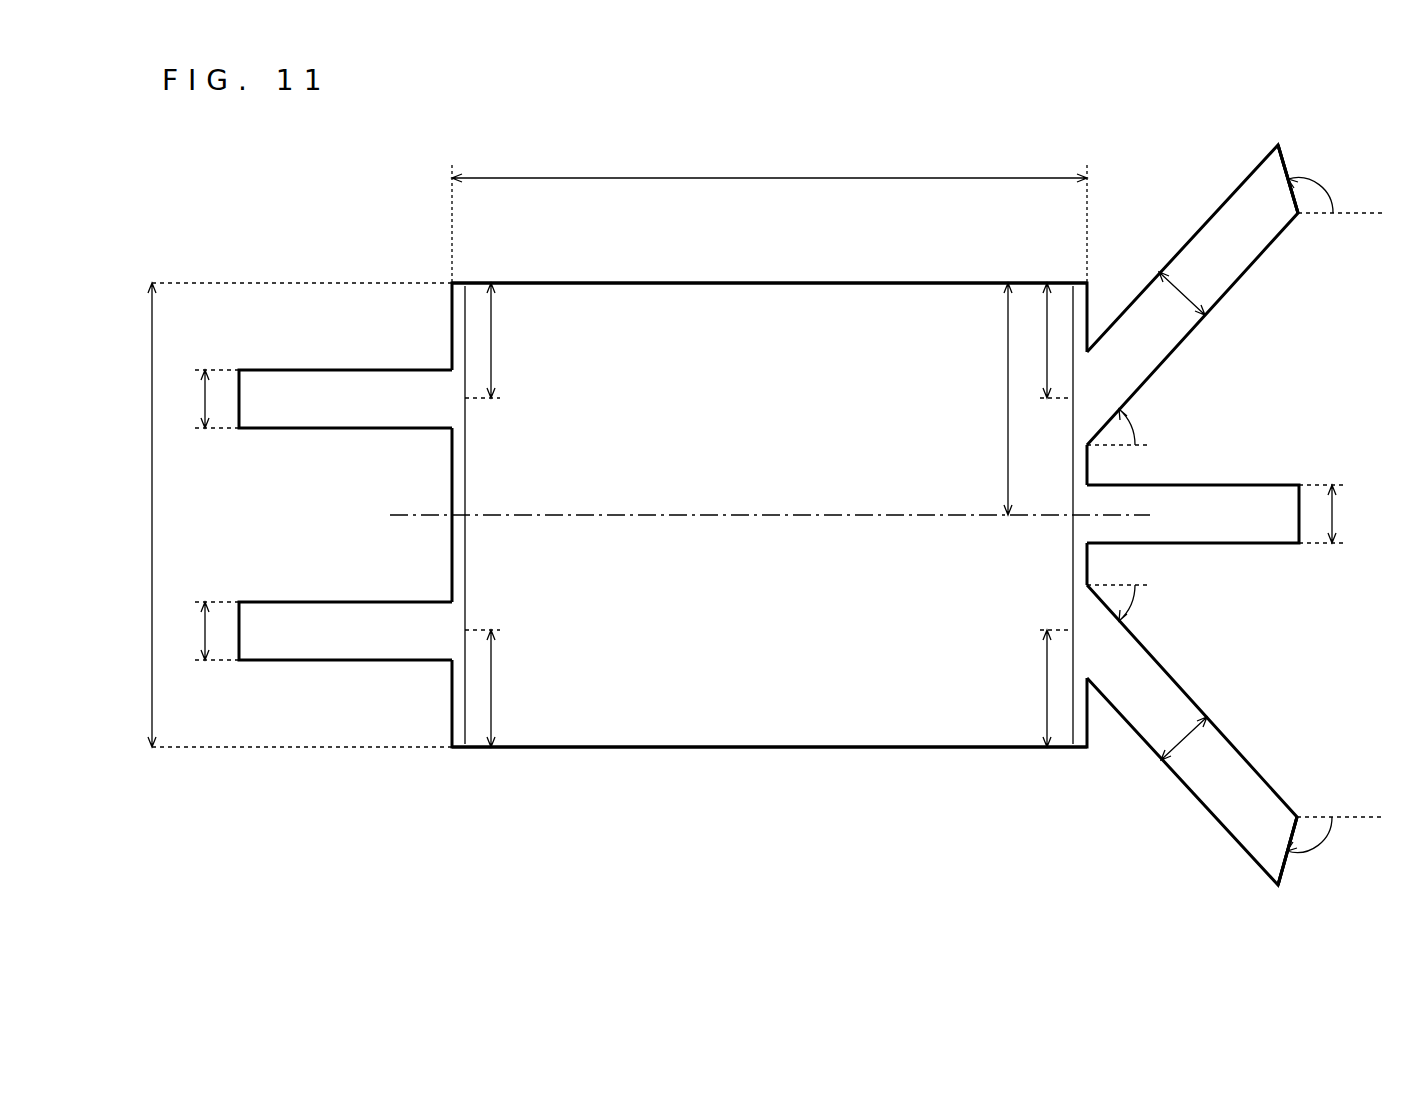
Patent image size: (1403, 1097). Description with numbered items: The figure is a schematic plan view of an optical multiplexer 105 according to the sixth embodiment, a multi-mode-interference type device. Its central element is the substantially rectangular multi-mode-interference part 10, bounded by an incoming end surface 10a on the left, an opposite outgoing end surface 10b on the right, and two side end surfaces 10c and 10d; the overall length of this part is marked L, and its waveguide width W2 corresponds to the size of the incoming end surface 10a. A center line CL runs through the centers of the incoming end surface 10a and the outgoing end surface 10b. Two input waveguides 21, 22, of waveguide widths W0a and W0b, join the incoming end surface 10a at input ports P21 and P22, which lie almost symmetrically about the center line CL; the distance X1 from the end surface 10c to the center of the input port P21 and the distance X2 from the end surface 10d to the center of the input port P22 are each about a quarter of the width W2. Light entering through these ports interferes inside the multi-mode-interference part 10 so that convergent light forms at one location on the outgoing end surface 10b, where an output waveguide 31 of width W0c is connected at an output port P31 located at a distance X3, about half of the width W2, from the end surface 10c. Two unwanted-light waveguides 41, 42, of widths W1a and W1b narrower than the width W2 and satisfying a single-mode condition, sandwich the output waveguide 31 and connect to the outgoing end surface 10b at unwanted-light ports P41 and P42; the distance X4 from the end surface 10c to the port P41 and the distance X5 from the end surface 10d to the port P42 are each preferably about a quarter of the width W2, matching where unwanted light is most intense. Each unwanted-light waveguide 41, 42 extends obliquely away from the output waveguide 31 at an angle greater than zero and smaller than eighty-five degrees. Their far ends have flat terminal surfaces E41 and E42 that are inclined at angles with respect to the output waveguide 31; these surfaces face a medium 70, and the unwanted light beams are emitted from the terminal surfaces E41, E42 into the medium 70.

The optical multiplexer 105 is at (368, 178).
The multi-mode-interference part 10 is at (648, 340).
The incoming end surface 10a is at (471, 480).
The outgoing end surface 10b is at (1065, 548).
The end surface 10c is at (777, 273).
The end surface 10d is at (777, 760).
The input waveguide 21 is at (325, 410).
The input waveguide 22 is at (330, 618).
The output waveguide 31 is at (1220, 500).
The unwanted-light waveguide 41 is at (1150, 325).
The unwanted-light waveguide 42 is at (1150, 705).
The medium 70 is at (1318, 160).
The terminal surface E41 is at (1286, 147).
The terminal surface E42 is at (1286, 879).
The input port P21 is at (438, 402).
The input port P22 is at (438, 634).
The output port P31 is at (1099, 531).
The unwanted-light port P41 is at (1099, 402).
The unwanted-light port P42 is at (1099, 634).
The center line CL is at (425, 515).
The waveguide width W2 is at (286, 515).
The waveguide width W0a is at (198, 399).
The waveguide width W0b is at (198, 631).
The waveguide width W0c is at (1343, 514).
The length of element L is at (769, 219).
The distance X1 is at (495, 340).
The distance X2 is at (495, 688).
The distance X3 is at (996, 399).
The distance X4 is at (1041, 340).
The distance X5 is at (1041, 688).
The waveguide width W1a is at (1195, 292).
The waveguide width W1b is at (1197, 745).